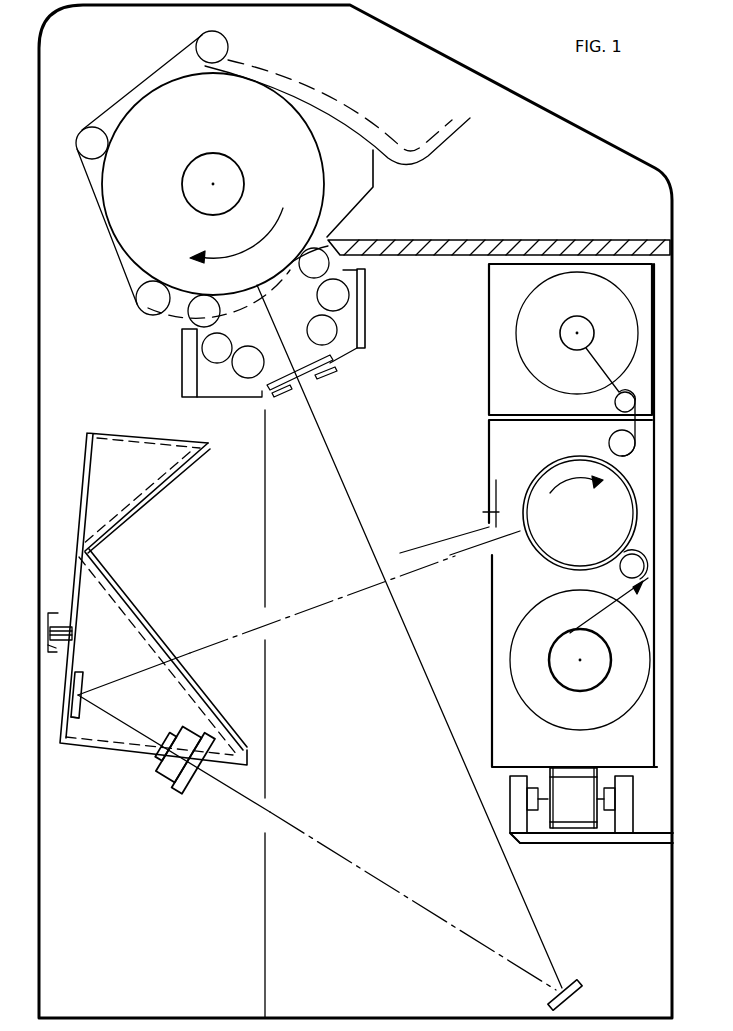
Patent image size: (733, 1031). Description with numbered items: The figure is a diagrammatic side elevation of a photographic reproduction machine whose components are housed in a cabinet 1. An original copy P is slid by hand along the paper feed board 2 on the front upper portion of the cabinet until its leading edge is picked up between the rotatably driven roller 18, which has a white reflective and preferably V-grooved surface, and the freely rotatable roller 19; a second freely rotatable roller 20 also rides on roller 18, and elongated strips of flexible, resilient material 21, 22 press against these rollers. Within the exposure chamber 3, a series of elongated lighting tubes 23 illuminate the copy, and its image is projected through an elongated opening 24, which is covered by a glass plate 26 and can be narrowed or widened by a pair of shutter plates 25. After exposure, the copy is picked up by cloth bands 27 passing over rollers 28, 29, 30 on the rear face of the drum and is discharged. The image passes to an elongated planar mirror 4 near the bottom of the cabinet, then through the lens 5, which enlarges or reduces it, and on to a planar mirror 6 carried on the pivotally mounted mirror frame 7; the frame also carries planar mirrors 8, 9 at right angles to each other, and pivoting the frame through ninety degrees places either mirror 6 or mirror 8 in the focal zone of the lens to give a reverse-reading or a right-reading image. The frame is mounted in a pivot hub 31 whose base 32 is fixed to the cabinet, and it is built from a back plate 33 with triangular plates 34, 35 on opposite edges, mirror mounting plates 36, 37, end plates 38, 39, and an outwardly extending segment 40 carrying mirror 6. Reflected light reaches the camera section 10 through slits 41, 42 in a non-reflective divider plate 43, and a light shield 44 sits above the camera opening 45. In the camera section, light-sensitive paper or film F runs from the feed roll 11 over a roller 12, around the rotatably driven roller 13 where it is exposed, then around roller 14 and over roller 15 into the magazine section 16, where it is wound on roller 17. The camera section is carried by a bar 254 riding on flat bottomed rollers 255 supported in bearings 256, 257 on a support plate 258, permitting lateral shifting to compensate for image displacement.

The cabinet 1 is at (544, 101).
The paper feed board 2 is at (473, 240).
The exposure chamber 3 is at (370, 303).
The elongated planar mirror 4 is at (582, 993).
The lens 5 is at (160, 794).
The planar mirror 6 is at (82, 680).
The mirror frame 7 is at (83, 618).
The planar mirror 8 is at (155, 500).
The planar mirror 9 is at (127, 592).
The camera section 10 is at (485, 609).
The feed roll 11 is at (584, 691).
The roller 12 is at (620, 573).
The rotatably driven roller 13 is at (588, 517).
The roller 14 is at (610, 441).
The roller 15 is at (615, 402).
The magazine section 16 is at (489, 333).
The roller 17 is at (583, 318).
The rotatably driven roller 18 is at (216, 135).
The freely rotatable roller 19 is at (307, 274).
The freely rotatable roller 20 is at (212, 318).
The strip of flexible resilient material 21 is at (330, 267).
The strip of flexible resilient material 22 is at (220, 341).
The lighting tubes 23 is at (236, 366).
The elongated opening 24 is at (318, 382).
The shutter plates 25 is at (340, 372).
The glass plate 26 is at (316, 358).
The cloth bands 27 is at (116, 242).
The roller 28 is at (153, 302).
The roller 29 is at (87, 139).
The roller 30 is at (212, 44).
The pivot hub 31 is at (58, 622).
The base 32 is at (53, 660).
The back plate 33 is at (82, 490).
The triangular plate 34 is at (132, 472).
The triangular plate 35 is at (155, 702).
The mirror mounting plate 36 is at (198, 463).
The mirror mounting plate 37 is at (150, 631).
The end plate 38 is at (118, 433).
The end plate 39 is at (95, 750).
The outwardly extending segment 40 is at (78, 718).
The slit 41 is at (268, 800).
The slit 42 is at (265, 630).
The non-reflective divider plate 43 is at (268, 710).
The light shield 44 is at (458, 532).
The opening 45 is at (493, 548).
The bar 254 is at (574, 767).
The flat bottomed rollers 255 is at (590, 804).
The bearing 256 is at (510, 782).
The bearing 257 is at (640, 782).
The support plate 258 is at (578, 840).
The original copy P is at (312, 95).
The film F is at (595, 610).